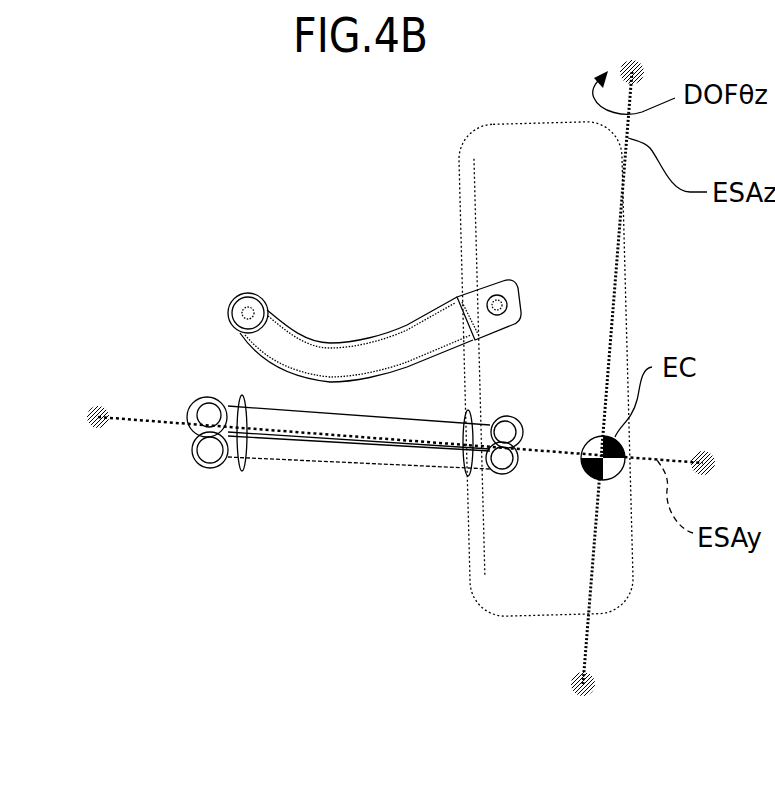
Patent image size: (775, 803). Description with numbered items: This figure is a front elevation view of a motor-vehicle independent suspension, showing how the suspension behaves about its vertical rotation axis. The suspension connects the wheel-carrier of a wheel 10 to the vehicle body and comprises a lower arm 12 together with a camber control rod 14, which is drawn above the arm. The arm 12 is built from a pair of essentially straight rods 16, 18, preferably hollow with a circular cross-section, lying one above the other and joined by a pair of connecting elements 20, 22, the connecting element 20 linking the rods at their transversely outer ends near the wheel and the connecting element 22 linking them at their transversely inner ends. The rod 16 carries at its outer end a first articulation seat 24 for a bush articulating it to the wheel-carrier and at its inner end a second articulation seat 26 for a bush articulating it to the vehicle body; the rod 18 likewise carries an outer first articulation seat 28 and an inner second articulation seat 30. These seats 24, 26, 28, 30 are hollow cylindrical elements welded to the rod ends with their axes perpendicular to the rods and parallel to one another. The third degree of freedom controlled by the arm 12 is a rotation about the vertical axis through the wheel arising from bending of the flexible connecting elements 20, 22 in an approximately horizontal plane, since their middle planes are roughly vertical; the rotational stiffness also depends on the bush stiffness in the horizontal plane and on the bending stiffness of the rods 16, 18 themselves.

The wheel 10 is at (510, 615).
The lower arm 12 is at (300, 478).
The camber control rod 14 is at (337, 343).
The rod 16 is at (347, 416).
The rod 18 is at (388, 462).
The connecting element 20 is at (463, 469).
The connecting element 22 is at (247, 398).
The first articulation seat 24 is at (507, 420).
The second articulation seat 26 is at (192, 408).
The first articulation seat 28 is at (513, 475).
The second articulation seat 30 is at (212, 467).